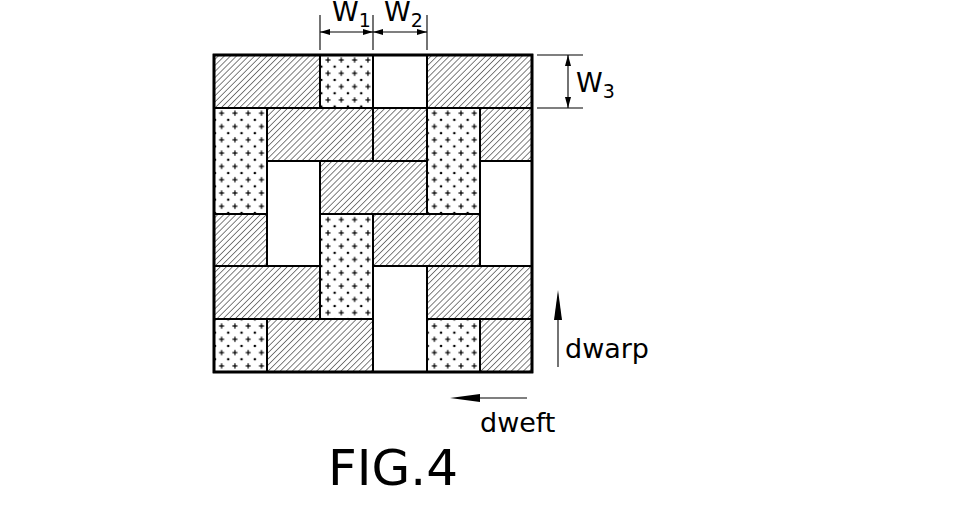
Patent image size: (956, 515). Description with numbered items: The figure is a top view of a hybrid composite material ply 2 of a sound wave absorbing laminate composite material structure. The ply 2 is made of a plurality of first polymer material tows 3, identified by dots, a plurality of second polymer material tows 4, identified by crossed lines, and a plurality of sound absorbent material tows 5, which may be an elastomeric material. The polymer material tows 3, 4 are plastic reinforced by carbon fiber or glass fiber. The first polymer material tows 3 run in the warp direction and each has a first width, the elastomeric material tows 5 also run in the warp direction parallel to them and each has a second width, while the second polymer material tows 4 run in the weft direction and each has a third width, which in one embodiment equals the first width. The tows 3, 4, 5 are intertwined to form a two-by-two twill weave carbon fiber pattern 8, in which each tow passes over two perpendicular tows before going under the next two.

The hybrid composite material ply 2 is at (418, 186).
The first polymer material tows 3 is at (320, 53).
The second polymer material tows 4 is at (500, 54).
The sound absorbent material tows 5 is at (408, 80).
The twill weave pattern 8 is at (135, 248).